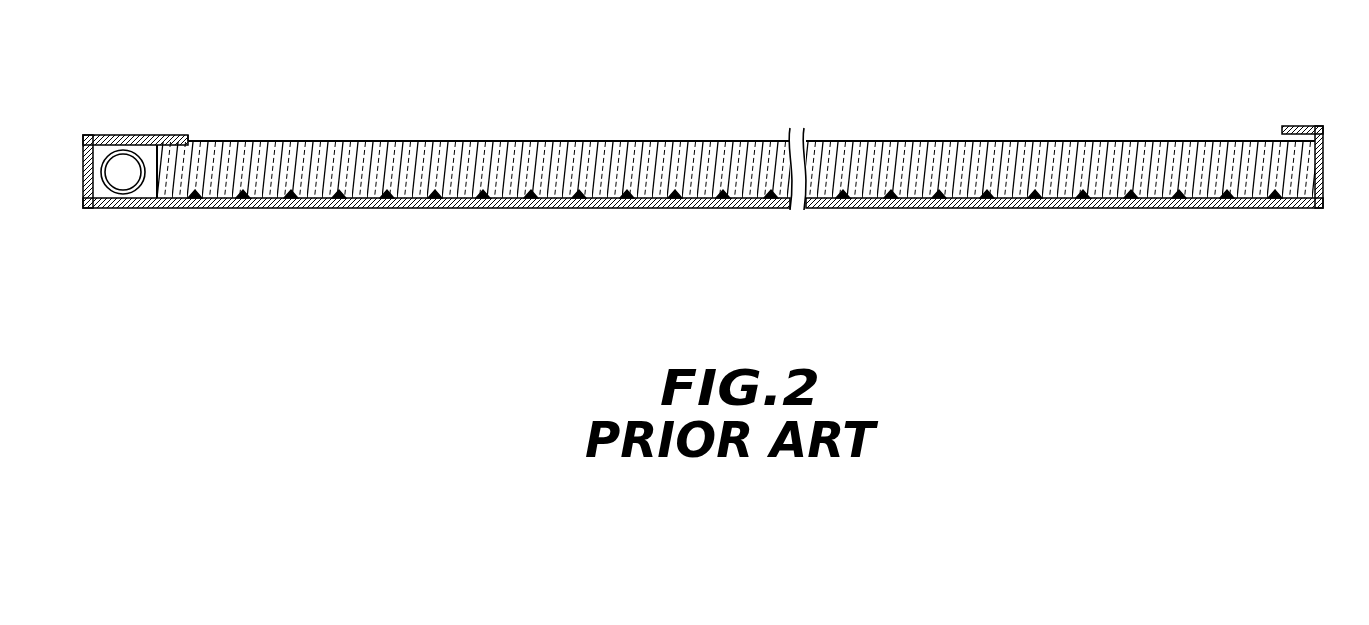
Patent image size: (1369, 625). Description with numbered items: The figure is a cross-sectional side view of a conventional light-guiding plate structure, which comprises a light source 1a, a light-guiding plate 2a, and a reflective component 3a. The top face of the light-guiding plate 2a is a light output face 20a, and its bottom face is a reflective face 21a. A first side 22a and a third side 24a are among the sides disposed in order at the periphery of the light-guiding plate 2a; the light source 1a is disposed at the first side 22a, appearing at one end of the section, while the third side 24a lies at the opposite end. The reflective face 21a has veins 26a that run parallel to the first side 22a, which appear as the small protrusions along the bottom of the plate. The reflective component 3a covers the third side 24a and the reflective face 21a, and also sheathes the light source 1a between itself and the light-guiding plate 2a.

The light source 1a is at (122, 185).
The light-guiding plate 2a is at (605, 168).
The reflective component 3a is at (883, 207).
The light output face 20a is at (518, 140).
The reflective face 21a is at (513, 207).
The first side 22a is at (143, 135).
The third side 24a is at (1324, 128).
The veins 26a is at (385, 207).